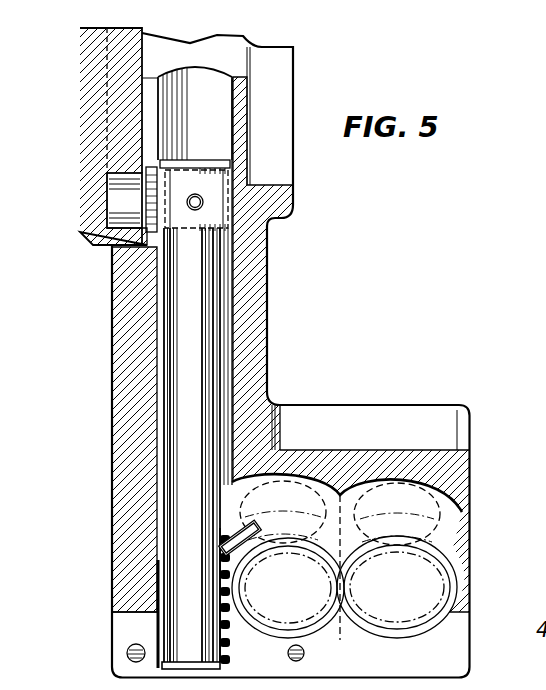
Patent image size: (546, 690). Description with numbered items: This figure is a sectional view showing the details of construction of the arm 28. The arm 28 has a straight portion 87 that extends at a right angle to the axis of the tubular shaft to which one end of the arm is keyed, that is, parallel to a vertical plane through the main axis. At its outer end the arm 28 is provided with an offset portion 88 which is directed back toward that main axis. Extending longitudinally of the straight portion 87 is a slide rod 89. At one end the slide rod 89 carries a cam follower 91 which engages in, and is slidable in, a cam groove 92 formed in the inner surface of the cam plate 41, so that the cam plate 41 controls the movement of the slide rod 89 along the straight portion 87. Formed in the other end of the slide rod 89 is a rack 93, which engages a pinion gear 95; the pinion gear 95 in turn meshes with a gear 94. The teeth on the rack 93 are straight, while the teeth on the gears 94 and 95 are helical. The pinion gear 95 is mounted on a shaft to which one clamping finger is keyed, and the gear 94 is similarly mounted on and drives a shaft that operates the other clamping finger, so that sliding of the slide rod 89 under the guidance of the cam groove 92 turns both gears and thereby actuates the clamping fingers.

The arm 28 is at (253, 305).
The cam plate 41 is at (80, 122).
The straight portion 87 is at (113, 318).
The offset portion 88 is at (383, 422).
The slide rod 89 is at (163, 400).
The cam follower 91 is at (107, 250).
The cam groove 92 is at (107, 200).
The rack 93 is at (230, 640).
The gear 94 is at (455, 583).
The pinion gear 95 is at (297, 634).